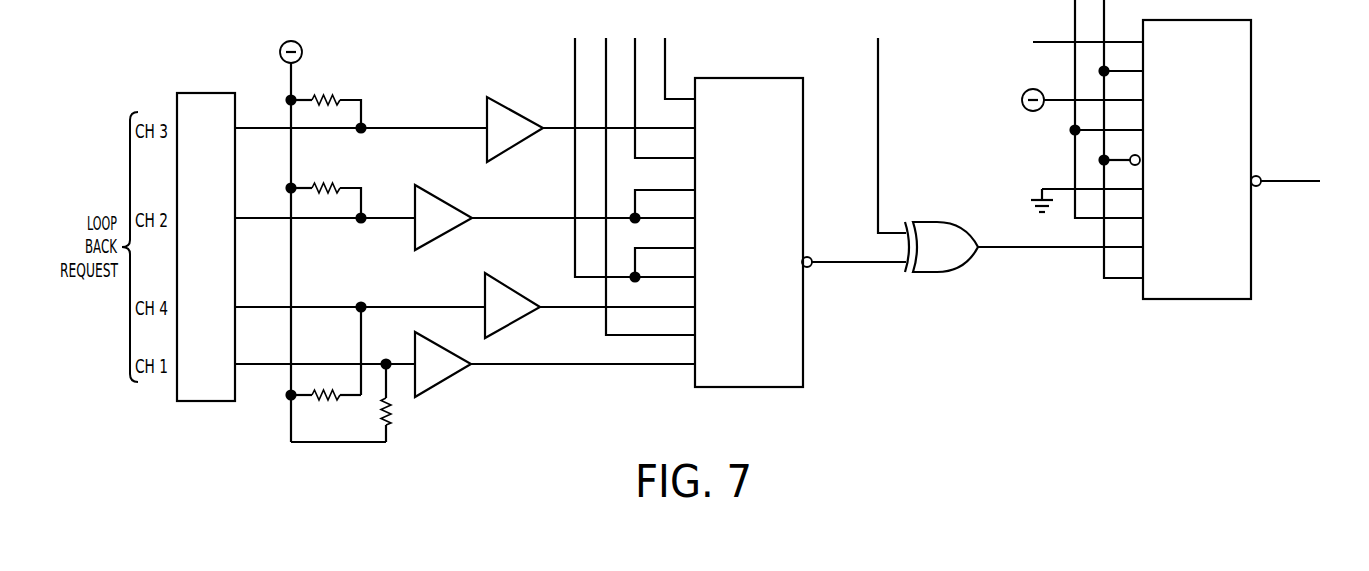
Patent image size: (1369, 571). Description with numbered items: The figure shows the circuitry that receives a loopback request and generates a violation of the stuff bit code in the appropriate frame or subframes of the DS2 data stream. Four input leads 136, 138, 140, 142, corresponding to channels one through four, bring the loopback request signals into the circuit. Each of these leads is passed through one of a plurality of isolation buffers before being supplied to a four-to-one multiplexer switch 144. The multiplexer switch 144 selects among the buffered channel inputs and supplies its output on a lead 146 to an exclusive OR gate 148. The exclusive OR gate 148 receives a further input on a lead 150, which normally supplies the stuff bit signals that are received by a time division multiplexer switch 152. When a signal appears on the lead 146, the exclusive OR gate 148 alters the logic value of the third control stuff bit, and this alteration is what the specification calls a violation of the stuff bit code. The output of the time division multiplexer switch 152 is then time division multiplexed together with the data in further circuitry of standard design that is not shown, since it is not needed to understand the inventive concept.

The input lead 136 is at (262, 128).
The input lead 138 is at (262, 218).
The input lead 140 is at (263, 307).
The input lead 142 is at (255, 365).
The 4-1 multiplexer switch 144 is at (803, 340).
The lead 146 is at (840, 262).
The exclusive OR gate 148 is at (938, 222).
The lead 150 is at (878, 137).
The time division multiplexer switch 152 is at (1251, 252).